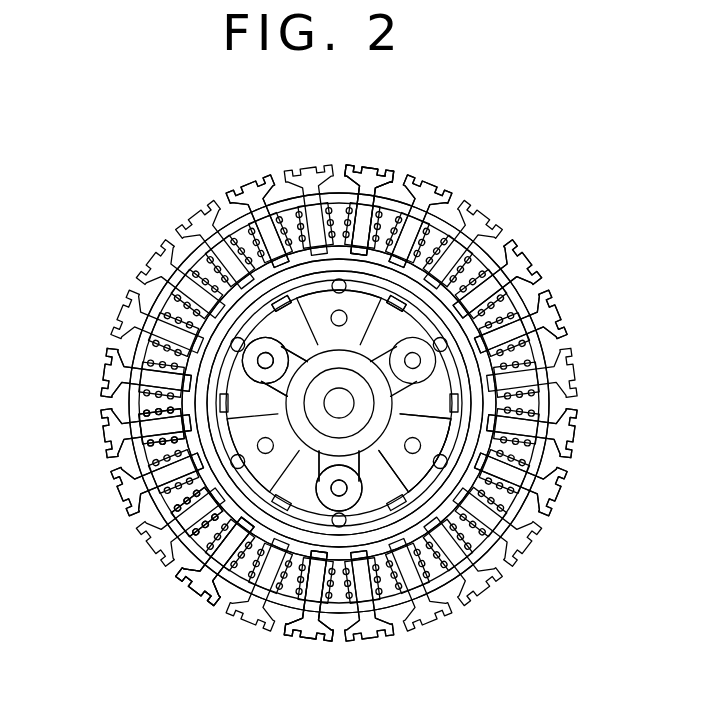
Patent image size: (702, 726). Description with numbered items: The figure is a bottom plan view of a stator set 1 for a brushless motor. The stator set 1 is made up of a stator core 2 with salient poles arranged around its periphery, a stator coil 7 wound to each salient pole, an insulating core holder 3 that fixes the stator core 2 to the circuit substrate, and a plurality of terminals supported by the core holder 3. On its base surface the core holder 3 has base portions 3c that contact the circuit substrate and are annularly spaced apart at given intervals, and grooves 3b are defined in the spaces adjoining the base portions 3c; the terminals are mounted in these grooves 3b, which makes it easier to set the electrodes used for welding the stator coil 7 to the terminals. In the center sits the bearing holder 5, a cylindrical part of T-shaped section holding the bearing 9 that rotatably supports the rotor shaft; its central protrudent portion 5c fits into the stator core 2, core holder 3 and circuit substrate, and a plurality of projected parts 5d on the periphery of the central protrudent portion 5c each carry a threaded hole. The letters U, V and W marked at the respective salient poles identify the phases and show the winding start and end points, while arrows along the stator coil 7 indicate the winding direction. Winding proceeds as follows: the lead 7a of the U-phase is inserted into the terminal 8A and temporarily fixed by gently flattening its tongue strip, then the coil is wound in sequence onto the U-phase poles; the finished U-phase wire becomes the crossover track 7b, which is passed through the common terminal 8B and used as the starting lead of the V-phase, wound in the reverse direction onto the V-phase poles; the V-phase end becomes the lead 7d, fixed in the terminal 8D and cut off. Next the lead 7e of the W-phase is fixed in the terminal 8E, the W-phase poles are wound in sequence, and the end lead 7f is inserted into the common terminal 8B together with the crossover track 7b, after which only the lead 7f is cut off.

The stator set 1 is at (140, 216).
The stator core 2 is at (552, 312).
The core holder 3 is at (142, 482).
The grooves 3b is at (228, 565).
The base portions 3c is at (455, 452).
The bearing holder 5 is at (410, 408).
The central protrudent portion 5c is at (282, 500).
The projected parts 5d is at (352, 530).
The stator coil 7 is at (178, 522).
The lead of the U-phase 7a is at (168, 432).
The crossover track 7b is at (190, 222).
The lead of the V-phase 7d is at (483, 395).
The lead of the W-phase 7e is at (418, 262).
The lead of the W-phase end 7f is at (343, 275).
The terminal 8A is at (228, 398).
The common terminal 8B is at (283, 300).
The terminal 8D is at (456, 402).
The terminal 8E is at (395, 303).
The bearing 9 is at (398, 478).
The U-phase designation U is at (197, 594).
The V-phase designation V is at (371, 178).
The W-phase designation W is at (252, 184).